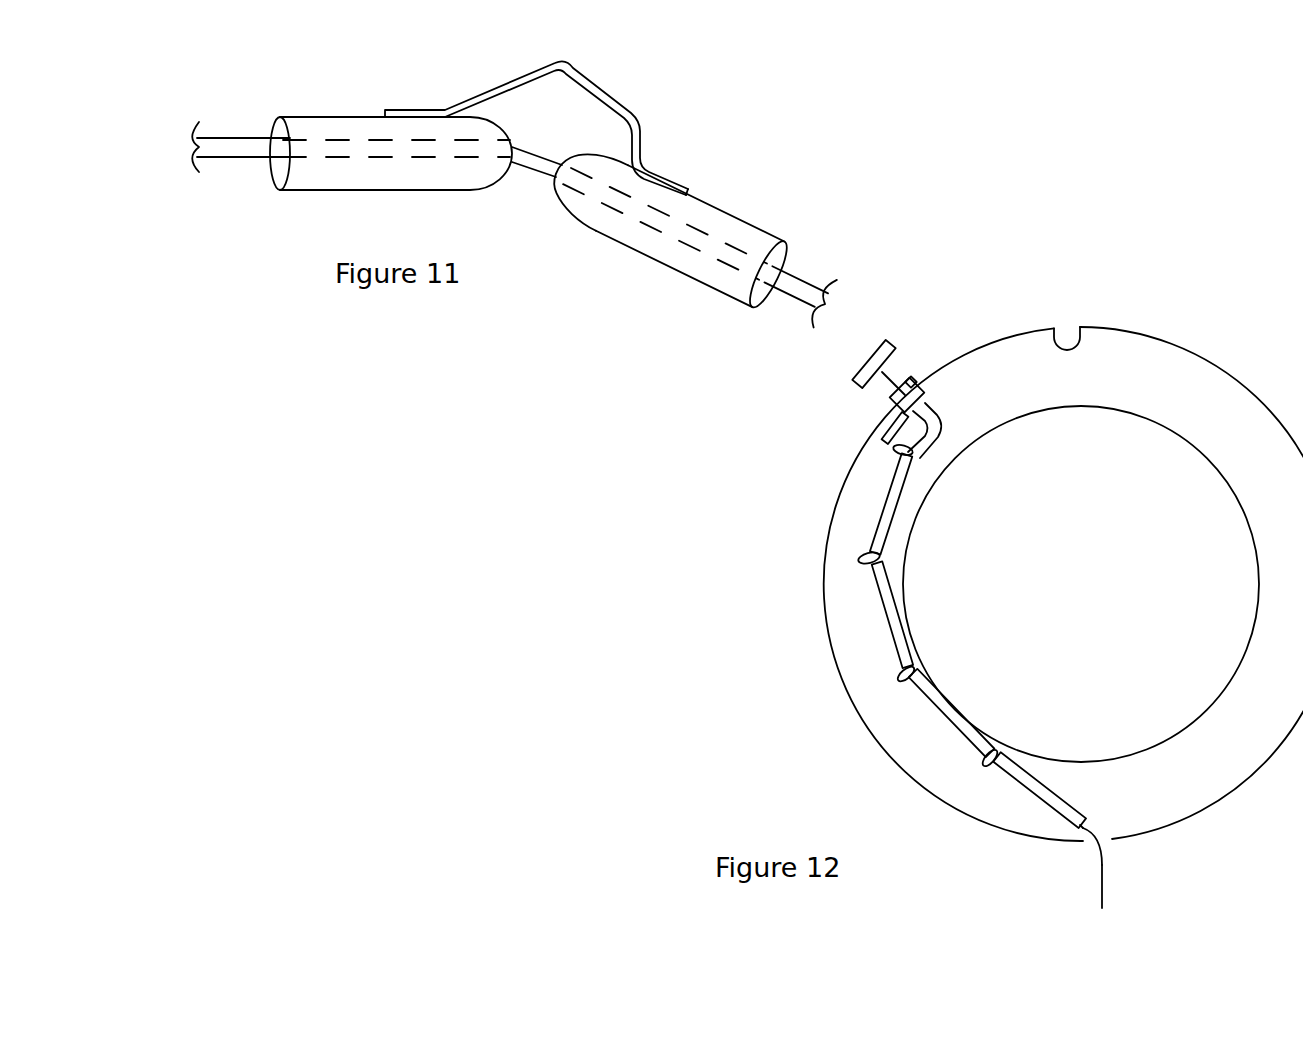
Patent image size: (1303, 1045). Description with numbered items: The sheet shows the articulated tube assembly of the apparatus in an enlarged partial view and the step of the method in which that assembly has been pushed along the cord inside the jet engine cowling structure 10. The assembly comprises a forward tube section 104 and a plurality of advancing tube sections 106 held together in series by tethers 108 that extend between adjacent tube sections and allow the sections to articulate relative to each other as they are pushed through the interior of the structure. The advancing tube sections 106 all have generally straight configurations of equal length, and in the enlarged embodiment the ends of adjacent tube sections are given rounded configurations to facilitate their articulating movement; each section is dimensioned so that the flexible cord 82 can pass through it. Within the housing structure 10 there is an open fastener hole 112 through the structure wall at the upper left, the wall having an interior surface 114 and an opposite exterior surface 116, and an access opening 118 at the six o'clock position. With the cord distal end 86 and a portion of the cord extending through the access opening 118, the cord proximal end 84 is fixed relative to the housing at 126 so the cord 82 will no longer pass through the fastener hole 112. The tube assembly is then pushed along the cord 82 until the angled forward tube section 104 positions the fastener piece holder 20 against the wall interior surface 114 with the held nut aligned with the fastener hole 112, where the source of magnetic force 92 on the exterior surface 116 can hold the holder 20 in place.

In FIG. 12, the jet engine cowling structure 10 is at (1063, 521).
In FIG. 12, the fastener piece holder 20 is at (900, 413).
In FIG. 11, the flexible cord 82 is at (531, 173).
In FIG. 12, the flexible cord 82 is at (1105, 862).
In FIG. 12, the cord proximal end 84 is at (875, 390).
In FIG. 12, the cord distal end 86 is at (1103, 900).
In FIG. 12, the source of magnetic force 92 is at (910, 378).
In FIG. 12, the forward tube section 104 is at (938, 418).
In FIG. 11, the advancing tube section 106 is at (333, 117).
In FIG. 12, the advancing tube section 106 is at (880, 518).
In FIG. 11, the tether 108 is at (616, 94).
In FIG. 12, the tether 108 is at (900, 452).
In FIG. 12, the open fastener hole 112 is at (921, 376).
In FIG. 12, the interior surface 114 is at (1080, 333).
In FIG. 12, the exterior surface 116 is at (1118, 328).
In FIG. 12, the access opening 118 is at (1087, 846).
In FIG. 12, the fixed cord proximal end 126 is at (888, 345).